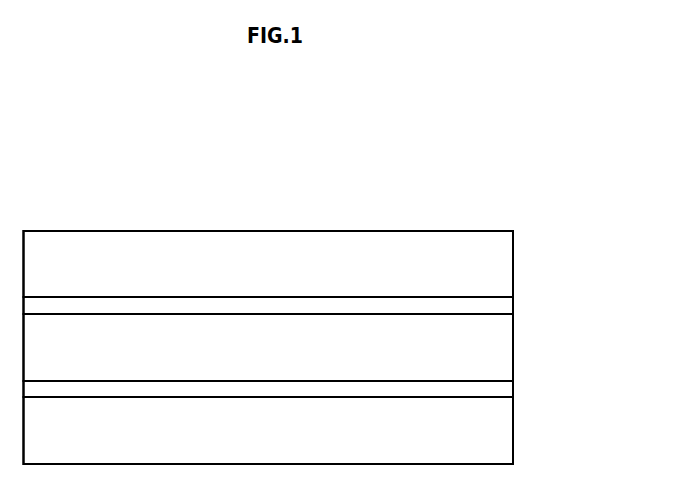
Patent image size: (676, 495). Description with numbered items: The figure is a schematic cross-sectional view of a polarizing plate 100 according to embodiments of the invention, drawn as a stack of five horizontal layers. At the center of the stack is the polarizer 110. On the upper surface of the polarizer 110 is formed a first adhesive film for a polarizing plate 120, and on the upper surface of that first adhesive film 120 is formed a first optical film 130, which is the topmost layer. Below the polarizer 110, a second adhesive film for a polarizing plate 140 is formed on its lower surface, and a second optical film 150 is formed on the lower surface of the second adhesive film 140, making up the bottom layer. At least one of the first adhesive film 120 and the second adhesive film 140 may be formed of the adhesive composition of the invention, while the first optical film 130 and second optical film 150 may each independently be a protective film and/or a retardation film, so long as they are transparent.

The polarizing plate 100 is at (482, 201).
The first optical film 130 is at (493, 264).
The first adhesive film for a polarizing plate 120 is at (493, 304).
The polarizer 110 is at (493, 347).
The second adhesive film for a polarizing plate 140 is at (493, 391).
The second optical film 150 is at (493, 431).